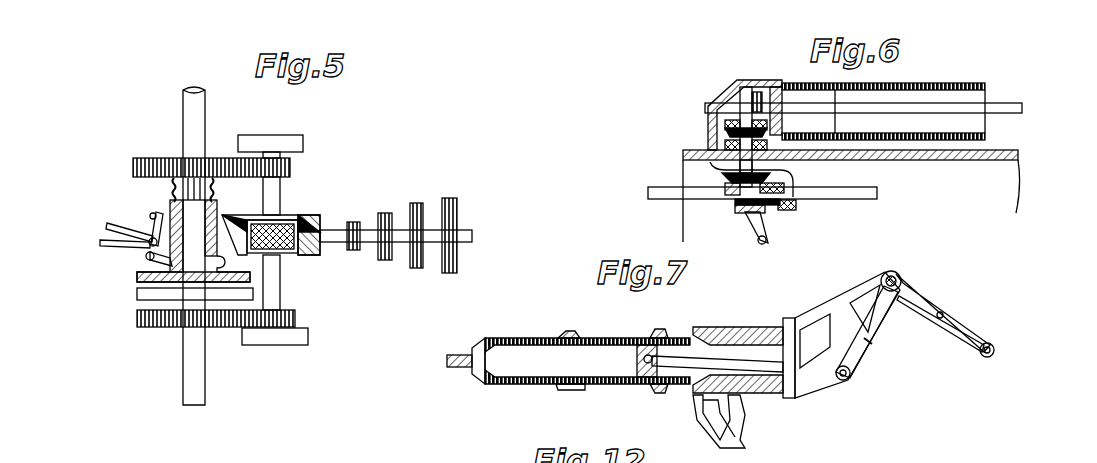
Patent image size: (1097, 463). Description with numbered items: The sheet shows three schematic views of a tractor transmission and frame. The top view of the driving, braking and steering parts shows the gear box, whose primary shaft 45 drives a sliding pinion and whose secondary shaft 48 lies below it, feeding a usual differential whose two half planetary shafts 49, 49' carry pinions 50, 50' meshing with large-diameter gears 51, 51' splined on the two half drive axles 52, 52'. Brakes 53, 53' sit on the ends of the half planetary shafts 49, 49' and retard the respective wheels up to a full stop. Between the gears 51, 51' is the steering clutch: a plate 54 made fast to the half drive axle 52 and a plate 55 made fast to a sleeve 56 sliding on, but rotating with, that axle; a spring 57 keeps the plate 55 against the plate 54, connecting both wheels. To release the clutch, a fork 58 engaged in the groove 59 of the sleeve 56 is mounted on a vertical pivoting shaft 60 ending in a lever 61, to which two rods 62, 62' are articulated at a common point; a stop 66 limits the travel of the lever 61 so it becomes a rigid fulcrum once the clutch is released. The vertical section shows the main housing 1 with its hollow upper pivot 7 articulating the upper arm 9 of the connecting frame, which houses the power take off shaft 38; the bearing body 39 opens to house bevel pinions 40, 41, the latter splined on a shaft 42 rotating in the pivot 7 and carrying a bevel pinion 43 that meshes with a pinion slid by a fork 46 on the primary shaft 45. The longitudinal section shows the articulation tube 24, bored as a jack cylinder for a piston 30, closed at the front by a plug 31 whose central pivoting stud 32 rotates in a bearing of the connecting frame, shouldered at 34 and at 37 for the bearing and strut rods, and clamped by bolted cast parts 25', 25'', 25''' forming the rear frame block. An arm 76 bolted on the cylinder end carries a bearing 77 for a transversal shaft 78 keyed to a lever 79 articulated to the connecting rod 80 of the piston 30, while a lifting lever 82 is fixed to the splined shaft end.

In FIG. 6, the main housing 1 is at (1020, 150).
In FIG. 6, the upper pivot 7 is at (742, 160).
In FIG. 6, the upper arm 9 is at (893, 83).
In FIG. 7, the tube 24 is at (593, 338).
In FIG. 7, the rear lower cast part 25' is at (801, 422).
In FIG. 7, the cast part 25'' is at (706, 420).
In FIG. 7, the cast part 25''' is at (738, 341).
In FIG. 7, the piston 30 is at (642, 360).
In FIG. 7, the plug 31 is at (480, 380).
In FIG. 7, the plug 32 is at (455, 354).
In FIG. 7, the shoulder 34 is at (657, 329).
In FIG. 7, the shoulder 37 is at (565, 333).
In FIG. 6, the power take off shaft 38 is at (1008, 104).
In FIG. 6, the bearing body 39 is at (750, 80).
In FIG. 6, the bevel pinion 40 is at (746, 104).
In FIG. 6, the bevel pinion 41 is at (712, 122).
In FIG. 6, the shaft 42 is at (740, 175).
In FIG. 6, the bevel pinion 43 is at (724, 178).
In FIG. 6, the primary shaft 45 is at (878, 193).
In FIG. 6, the fork 46 is at (750, 236).
In FIG. 5, the secondary shaft 48 is at (470, 232).
In FIG. 5, the half planetary shaft 49 is at (335, 294).
In FIG. 5, the half planetary shaft 49' is at (323, 179).
In FIG. 5, the pinion 50 is at (340, 322).
In FIG. 5, the pinion 50' is at (330, 143).
In FIG. 5, the gear 51 is at (216, 343).
In FIG. 5, the gear 51' is at (211, 131).
In FIG. 5, the half drive axle 52 is at (177, 250).
In FIG. 5, the half drive axle 52' is at (147, 77).
In FIG. 5, the brake 53 is at (288, 314).
In FIG. 5, the brake 53' is at (286, 153).
In FIG. 5, the plate 54 is at (142, 292).
In FIG. 5, the plate 55 is at (138, 284).
In FIG. 5, the sleeve 56 is at (170, 206).
In FIG. 5, the spring 57 is at (213, 188).
In FIG. 5, the fork 58 is at (152, 270).
In FIG. 5, the groove 59 is at (218, 262).
In FIG. 5, the vertical pivoting shaft 60 is at (146, 258).
In FIG. 5, the lever 61 is at (149, 230).
In FIG. 5, the rod 62 is at (108, 256).
In FIG. 5, the rod 62' is at (107, 228).
In FIG. 5, the stop 66 is at (156, 214).
In FIG. 7, the arm 76 is at (806, 318).
In FIG. 7, the bearing 77 is at (896, 275).
In FIG. 7, the transversal shaft 78 is at (905, 283).
In FIG. 7, the lever 79 is at (880, 328).
In FIG. 7, the connecting rod 80 is at (692, 375).
In FIG. 7, the lifting lever 82 is at (960, 323).